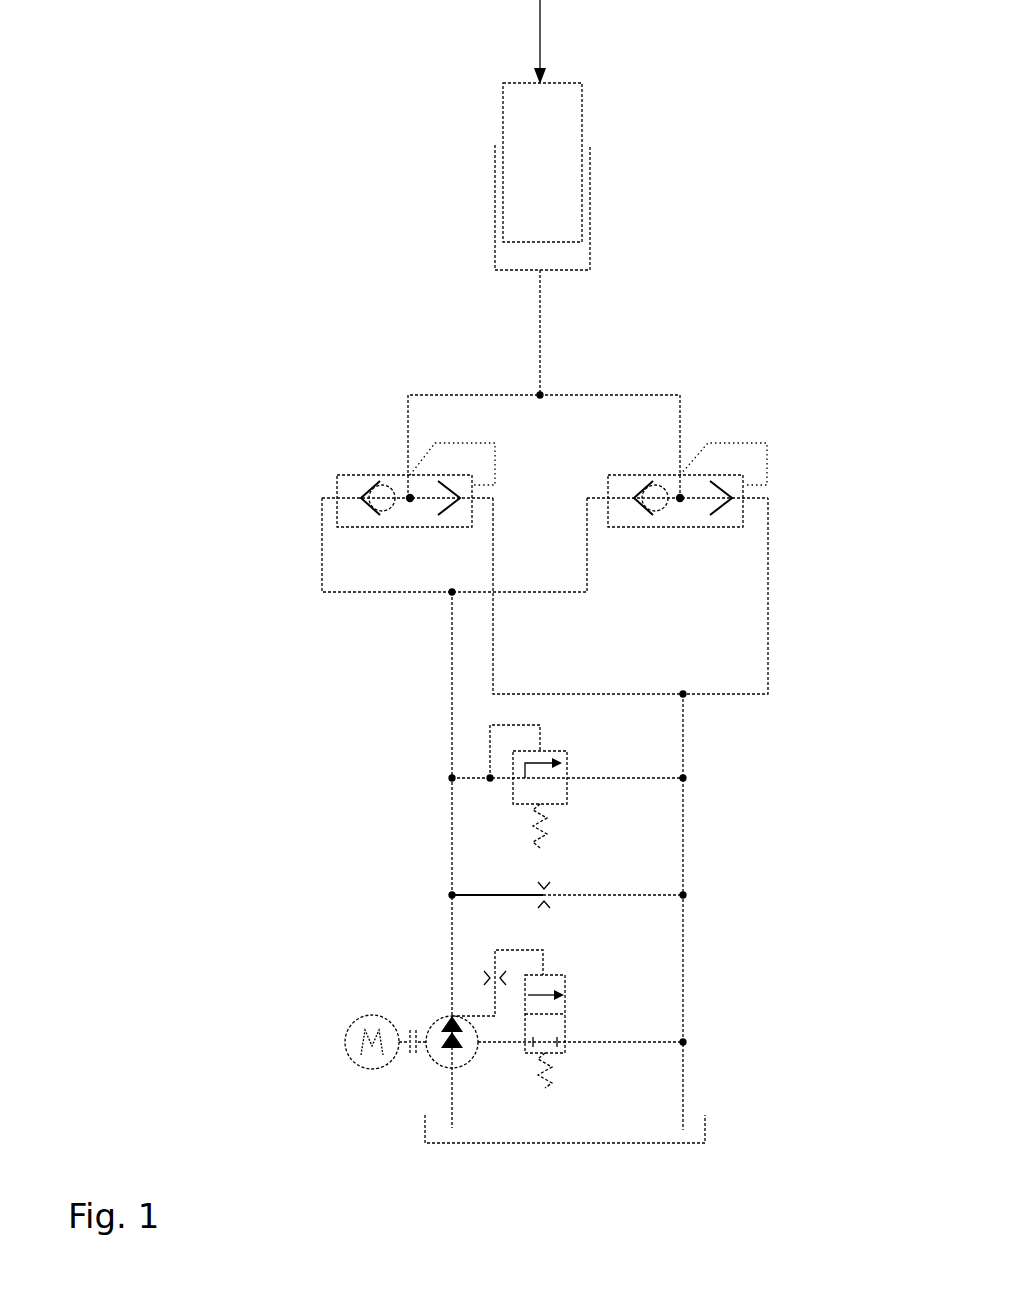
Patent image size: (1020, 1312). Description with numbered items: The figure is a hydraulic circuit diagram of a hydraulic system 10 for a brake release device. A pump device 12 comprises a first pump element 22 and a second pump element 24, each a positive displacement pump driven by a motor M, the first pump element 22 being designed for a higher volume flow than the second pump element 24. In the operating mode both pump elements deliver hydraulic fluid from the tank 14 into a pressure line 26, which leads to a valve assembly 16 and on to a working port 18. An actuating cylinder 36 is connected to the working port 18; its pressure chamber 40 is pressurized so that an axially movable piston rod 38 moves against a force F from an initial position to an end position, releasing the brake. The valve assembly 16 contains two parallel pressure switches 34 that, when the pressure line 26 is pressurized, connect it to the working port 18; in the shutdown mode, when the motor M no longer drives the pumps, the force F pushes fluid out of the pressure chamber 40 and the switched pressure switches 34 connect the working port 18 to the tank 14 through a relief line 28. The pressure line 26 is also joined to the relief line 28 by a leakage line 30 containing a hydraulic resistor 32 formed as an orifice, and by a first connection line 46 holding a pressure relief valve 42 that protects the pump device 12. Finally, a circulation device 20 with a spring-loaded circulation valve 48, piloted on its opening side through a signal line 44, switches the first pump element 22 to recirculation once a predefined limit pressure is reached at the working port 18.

The hydraulic system 10 is at (346, 306).
The pump device 12 is at (427, 1008).
The tank 14 is at (700, 1125).
The valve assembly 16 is at (403, 724).
The working port 18 is at (541, 395).
The circulation device 20 is at (595, 996).
The first pump element 22 is at (437, 1060).
The second pump element 24 is at (412, 1042).
The pressure line 26 is at (450, 633).
The relief line 28 is at (683, 748).
The leakage line 30 is at (600, 895).
The hydraulic resistor 32 is at (545, 884).
The pressure switch 34 is at (356, 473).
The actuating cylinder 36 is at (620, 166).
The piston rod 38 is at (522, 145).
The pressure chamber 40 is at (565, 252).
The pressure relief valve 42 is at (552, 751).
The signal line 44 is at (515, 948).
The first connection line 46 is at (648, 778).
The circulation valve 48 is at (568, 1012).